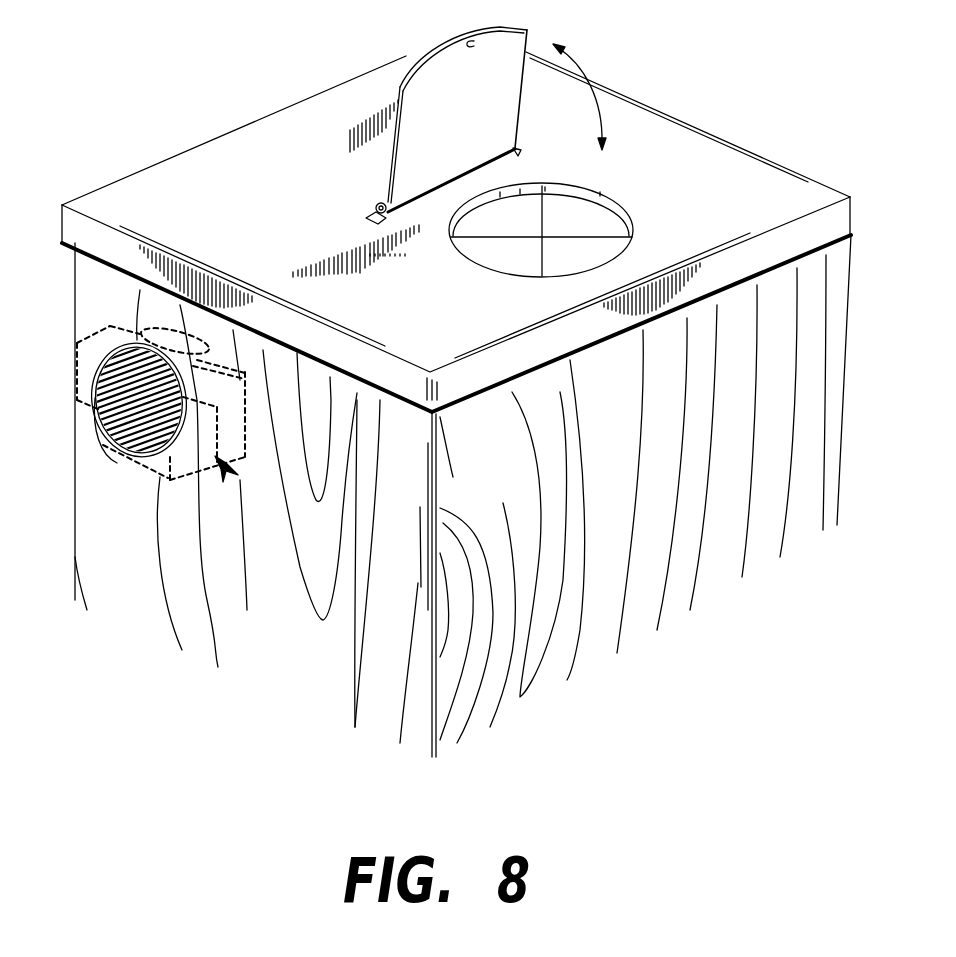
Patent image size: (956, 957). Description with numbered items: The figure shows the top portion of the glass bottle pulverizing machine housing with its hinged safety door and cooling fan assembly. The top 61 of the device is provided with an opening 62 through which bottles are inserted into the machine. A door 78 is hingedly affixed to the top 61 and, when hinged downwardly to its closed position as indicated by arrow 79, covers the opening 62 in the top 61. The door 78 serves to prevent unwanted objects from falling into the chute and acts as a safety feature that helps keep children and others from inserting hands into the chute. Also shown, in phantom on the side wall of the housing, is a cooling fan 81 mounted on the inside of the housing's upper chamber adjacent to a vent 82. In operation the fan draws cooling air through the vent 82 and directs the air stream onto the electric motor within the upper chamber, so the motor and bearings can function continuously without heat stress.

The top 61 is at (740, 167).
The opening 62 is at (512, 181).
The door 78 is at (508, 90).
The arrow 79 is at (603, 108).
The cooling fan 81 is at (222, 473).
The vent 82 is at (140, 410).